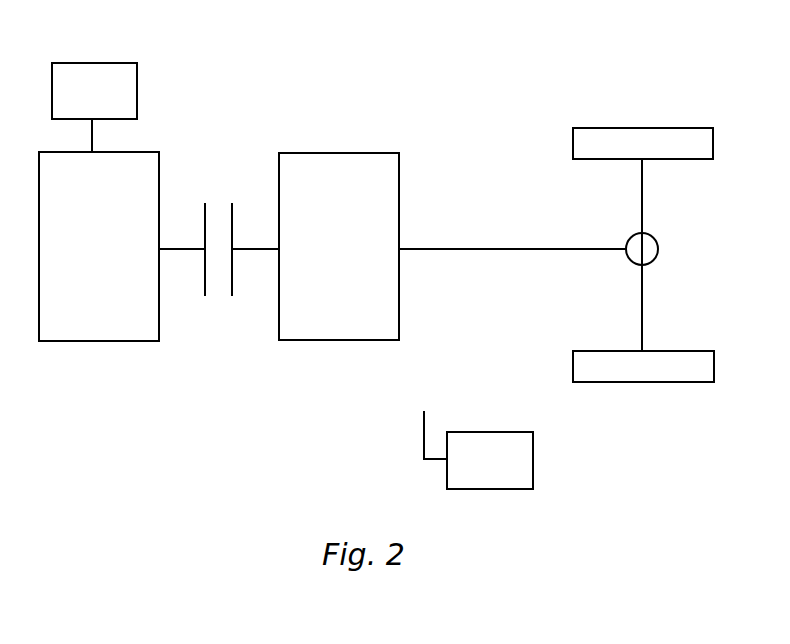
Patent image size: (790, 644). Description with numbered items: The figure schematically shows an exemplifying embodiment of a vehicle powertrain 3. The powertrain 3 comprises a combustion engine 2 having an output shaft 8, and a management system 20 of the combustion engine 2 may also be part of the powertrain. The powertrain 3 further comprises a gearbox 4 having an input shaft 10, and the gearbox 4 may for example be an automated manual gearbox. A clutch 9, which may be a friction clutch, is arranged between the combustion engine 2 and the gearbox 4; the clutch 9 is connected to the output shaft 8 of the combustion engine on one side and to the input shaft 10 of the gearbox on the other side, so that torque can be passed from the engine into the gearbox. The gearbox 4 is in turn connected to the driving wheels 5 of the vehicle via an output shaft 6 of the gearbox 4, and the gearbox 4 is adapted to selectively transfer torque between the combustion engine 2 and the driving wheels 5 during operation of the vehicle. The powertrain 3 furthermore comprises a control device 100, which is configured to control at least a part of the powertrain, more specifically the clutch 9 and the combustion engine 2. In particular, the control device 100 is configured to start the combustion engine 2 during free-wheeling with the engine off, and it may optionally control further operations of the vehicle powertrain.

The combustion engine 2 is at (103, 341).
The management system 20 is at (94, 107).
The output shaft 8 is at (183, 248).
The input shaft 10 is at (252, 249).
The clutch 9 is at (232, 283).
The gearbox 4 is at (347, 340).
The powertrain 3 is at (556, 228).
The output shaft 6 is at (603, 249).
The driving wheels 5 is at (643, 127).
The control device 100 is at (478, 450).